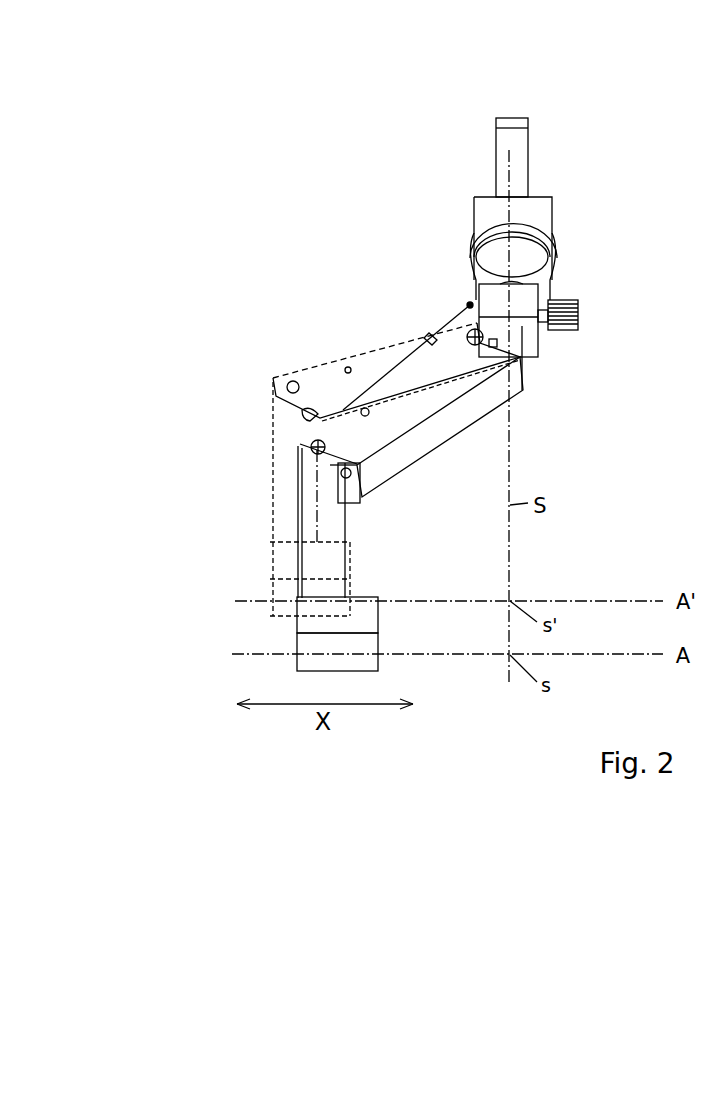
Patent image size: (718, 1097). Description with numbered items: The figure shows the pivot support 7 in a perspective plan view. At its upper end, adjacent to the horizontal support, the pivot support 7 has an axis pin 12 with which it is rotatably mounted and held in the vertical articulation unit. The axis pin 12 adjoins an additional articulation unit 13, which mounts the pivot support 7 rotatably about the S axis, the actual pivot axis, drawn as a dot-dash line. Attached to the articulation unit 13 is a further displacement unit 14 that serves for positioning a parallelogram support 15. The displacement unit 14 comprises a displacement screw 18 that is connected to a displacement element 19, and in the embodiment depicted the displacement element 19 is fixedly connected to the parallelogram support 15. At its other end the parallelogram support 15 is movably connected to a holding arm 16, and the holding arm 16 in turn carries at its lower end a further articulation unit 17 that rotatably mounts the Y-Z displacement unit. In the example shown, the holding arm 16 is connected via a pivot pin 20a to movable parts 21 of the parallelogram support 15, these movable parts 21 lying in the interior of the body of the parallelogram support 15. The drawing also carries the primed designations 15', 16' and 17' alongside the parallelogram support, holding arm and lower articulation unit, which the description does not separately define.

The pivot support 7 is at (220, 375).
The axis pin 12 is at (507, 145).
The articulation unit 13 is at (483, 273).
The displacement unit 14 is at (515, 295).
The parallelogram support 15 is at (420, 410).
The upper arm plate 15' is at (377, 356).
The holding arm 16 is at (277, 558).
The outer column 16' is at (245, 499).
The articulation unit 17 is at (292, 642).
The upper base part 17' is at (267, 591).
The displacement screw 18 is at (573, 328).
The displacement element 19 is at (450, 325).
The pivot pin 20a is at (305, 443).
The movable parts 21 is at (360, 498).